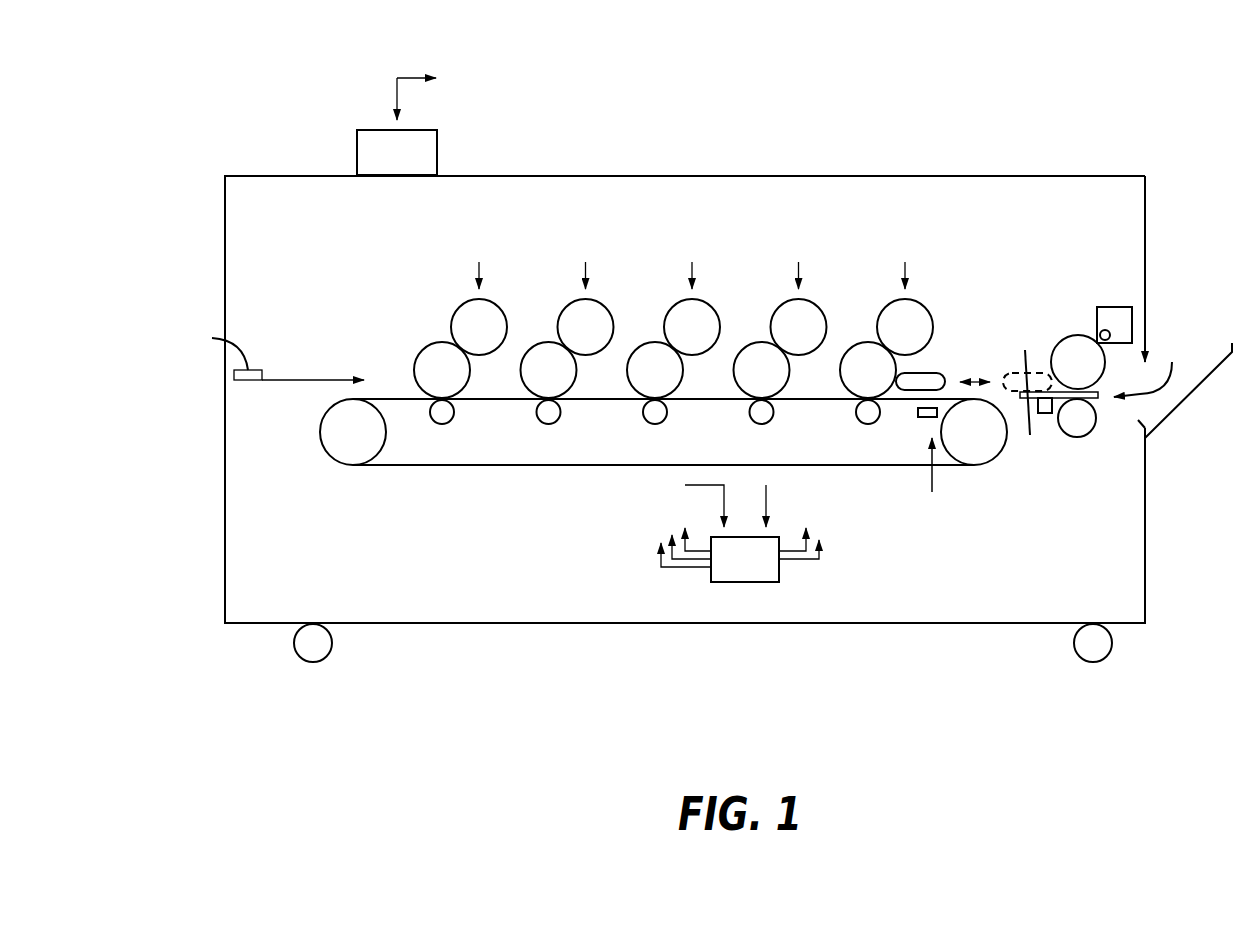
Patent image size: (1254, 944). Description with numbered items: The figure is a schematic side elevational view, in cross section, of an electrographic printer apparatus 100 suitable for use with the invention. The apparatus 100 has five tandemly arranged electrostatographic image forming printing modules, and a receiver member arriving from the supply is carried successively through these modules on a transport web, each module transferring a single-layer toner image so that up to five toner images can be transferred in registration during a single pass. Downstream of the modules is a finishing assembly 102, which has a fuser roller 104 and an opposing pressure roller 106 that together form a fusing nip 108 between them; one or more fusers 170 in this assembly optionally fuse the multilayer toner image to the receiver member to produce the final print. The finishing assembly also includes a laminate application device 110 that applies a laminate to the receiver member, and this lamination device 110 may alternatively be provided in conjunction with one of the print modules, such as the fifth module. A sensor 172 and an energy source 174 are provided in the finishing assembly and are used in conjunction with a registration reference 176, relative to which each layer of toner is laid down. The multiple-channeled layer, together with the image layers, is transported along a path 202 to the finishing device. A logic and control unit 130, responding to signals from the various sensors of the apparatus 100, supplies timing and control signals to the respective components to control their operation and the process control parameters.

The electrographic printer apparatus 100 is at (1026, 108).
The finishing assembly 102 is at (1019, 249).
The fuser roller 104 is at (1078, 335).
The pressure roller 106 is at (1077, 437).
The fusing nip 108 is at (1153, 365).
The laminate application device 110 is at (933, 373).
The logic and control unit 130 is at (745, 582).
The fuser 170 is at (1078, 246).
The sensor 172 is at (925, 417).
The energy source 174 is at (932, 492).
The registration reference 176 is at (921, 402).
The path 202 is at (1113, 307).